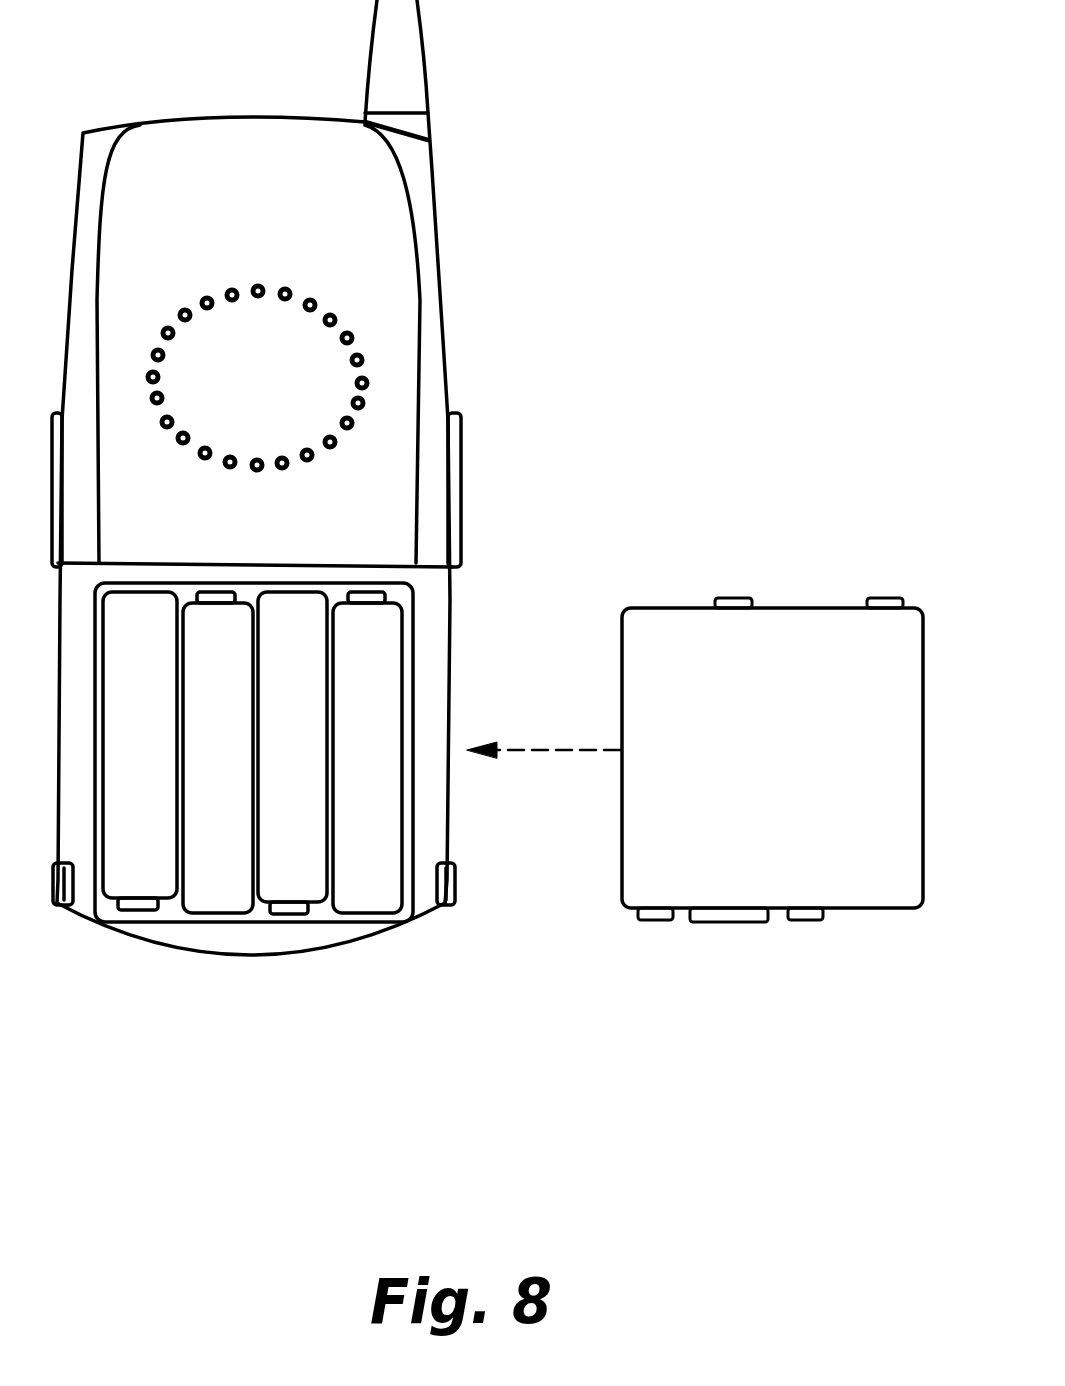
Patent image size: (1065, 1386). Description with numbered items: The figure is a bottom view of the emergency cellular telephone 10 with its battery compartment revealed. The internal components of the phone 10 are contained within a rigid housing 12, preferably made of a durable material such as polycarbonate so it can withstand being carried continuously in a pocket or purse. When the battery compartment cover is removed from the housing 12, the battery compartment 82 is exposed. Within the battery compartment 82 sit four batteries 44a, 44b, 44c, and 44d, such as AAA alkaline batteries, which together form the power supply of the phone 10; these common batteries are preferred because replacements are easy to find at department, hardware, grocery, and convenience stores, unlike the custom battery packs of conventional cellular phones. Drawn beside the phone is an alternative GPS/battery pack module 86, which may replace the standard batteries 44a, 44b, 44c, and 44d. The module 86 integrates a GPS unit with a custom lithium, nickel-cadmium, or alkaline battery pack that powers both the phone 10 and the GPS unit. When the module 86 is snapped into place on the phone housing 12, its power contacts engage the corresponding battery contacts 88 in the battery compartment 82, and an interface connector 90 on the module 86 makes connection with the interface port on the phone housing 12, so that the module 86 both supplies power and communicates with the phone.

The emergency cellular telephone 10 is at (525, 185).
The rigid housing 12 is at (447, 345).
The battery compartment 82 is at (415, 670).
The battery 44a is at (112, 903).
The battery 44b is at (210, 913).
The battery 44c is at (285, 918).
The battery 44d is at (382, 918).
The GPS/battery pack module 86 is at (620, 815).
The battery contacts 88 is at (723, 598).
The interface connector 90 is at (725, 922).